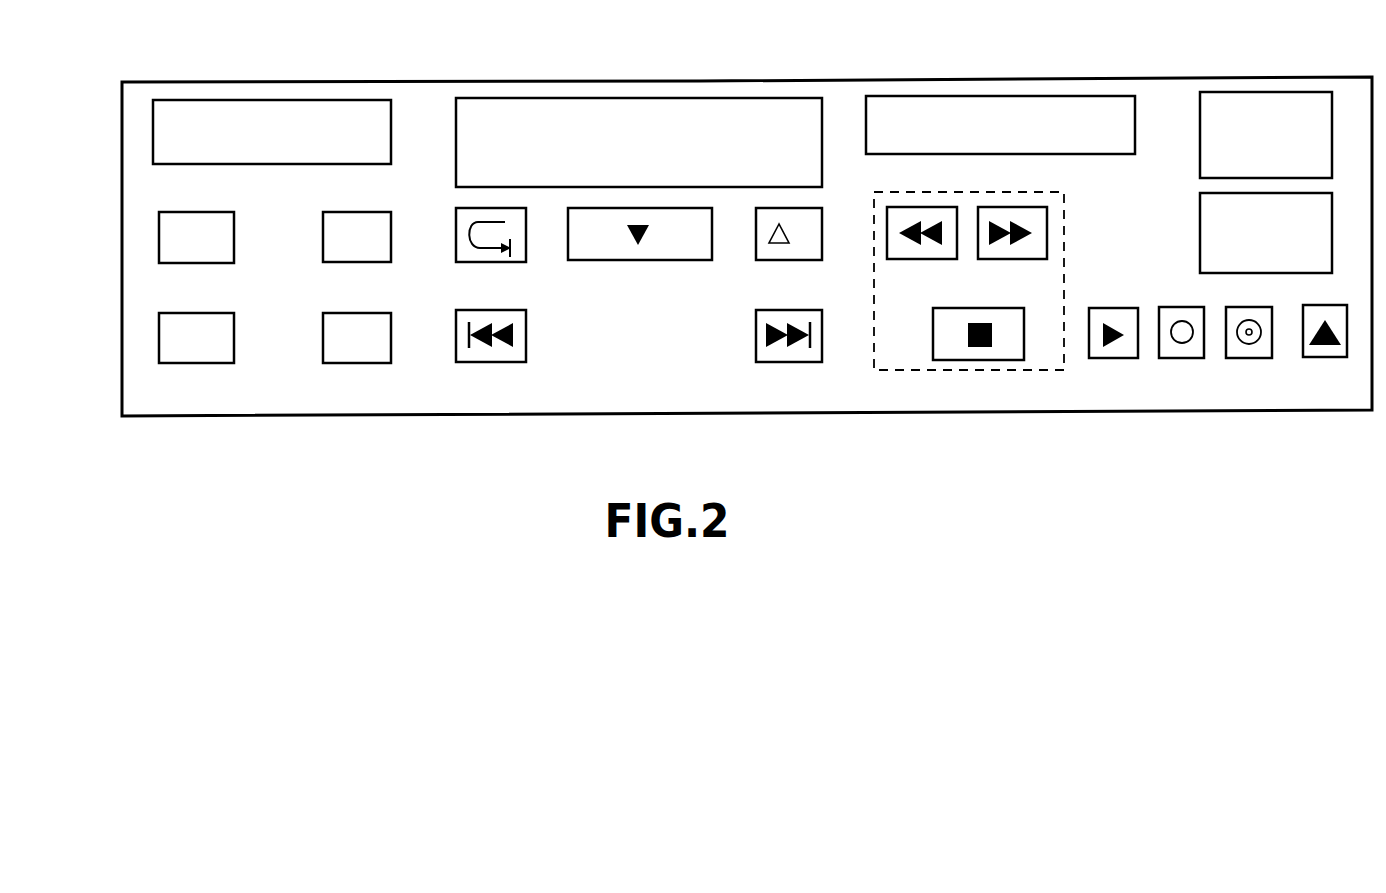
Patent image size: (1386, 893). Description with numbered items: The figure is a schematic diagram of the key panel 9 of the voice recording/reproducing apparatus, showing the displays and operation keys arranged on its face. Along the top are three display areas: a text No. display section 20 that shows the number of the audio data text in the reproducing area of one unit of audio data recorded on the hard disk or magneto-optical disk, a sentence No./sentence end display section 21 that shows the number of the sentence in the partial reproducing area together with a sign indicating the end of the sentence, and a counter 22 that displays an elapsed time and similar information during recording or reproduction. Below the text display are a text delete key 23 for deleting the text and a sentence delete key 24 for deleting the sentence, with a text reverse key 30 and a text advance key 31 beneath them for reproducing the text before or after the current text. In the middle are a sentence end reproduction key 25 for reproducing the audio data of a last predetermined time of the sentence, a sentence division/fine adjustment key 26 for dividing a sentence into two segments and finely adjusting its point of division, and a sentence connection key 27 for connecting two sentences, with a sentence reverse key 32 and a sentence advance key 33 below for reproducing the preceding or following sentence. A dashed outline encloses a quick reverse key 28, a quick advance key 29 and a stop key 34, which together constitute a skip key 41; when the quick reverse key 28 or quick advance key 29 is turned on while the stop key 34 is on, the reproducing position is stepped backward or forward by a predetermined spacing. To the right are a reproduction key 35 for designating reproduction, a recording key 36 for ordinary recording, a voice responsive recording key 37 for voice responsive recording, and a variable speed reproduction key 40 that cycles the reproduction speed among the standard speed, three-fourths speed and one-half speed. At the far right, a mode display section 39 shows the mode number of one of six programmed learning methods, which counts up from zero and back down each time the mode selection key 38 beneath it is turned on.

The key panel 9 is at (1160, 60).
The text No. display section 20 is at (270, 100).
The sentence No./sentence end display section 21 is at (603, 98).
The counter 22 is at (987, 96).
The text delete key 23 is at (199, 212).
The sentence delete key 24 is at (354, 212).
The sentence end reproduction key 25 is at (497, 262).
The sentence division/fine adjustment key 26 is at (637, 260).
The sentence connection key 27 is at (802, 252).
The quick reverse key 28 is at (934, 259).
The quick advance key 29 is at (1012, 253).
The text reverse key 30 is at (203, 313).
The text advance key 31 is at (357, 313).
The sentence reverse key 32 is at (497, 362).
The sentence advance key 33 is at (797, 362).
The stop key 34 is at (981, 360).
The reproduction key 35 is at (1114, 358).
The recording key 36 is at (1190, 358).
The voice responsive recording key 37 is at (1258, 358).
The mode selection key 38 is at (1200, 233).
The mode display section 39 is at (1200, 126).
The variable speed reproduction key 40 is at (1333, 357).
The skip key 41 is at (1065, 222).